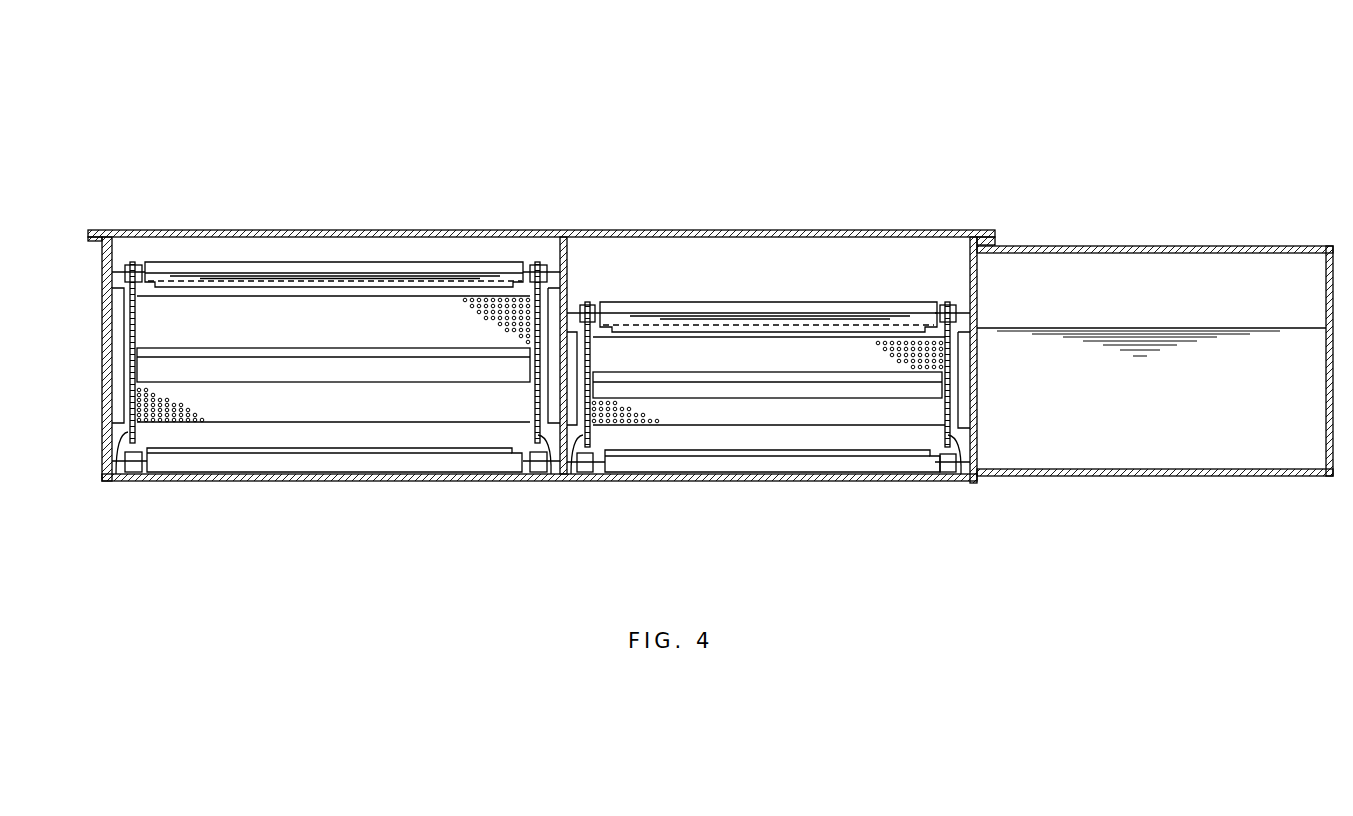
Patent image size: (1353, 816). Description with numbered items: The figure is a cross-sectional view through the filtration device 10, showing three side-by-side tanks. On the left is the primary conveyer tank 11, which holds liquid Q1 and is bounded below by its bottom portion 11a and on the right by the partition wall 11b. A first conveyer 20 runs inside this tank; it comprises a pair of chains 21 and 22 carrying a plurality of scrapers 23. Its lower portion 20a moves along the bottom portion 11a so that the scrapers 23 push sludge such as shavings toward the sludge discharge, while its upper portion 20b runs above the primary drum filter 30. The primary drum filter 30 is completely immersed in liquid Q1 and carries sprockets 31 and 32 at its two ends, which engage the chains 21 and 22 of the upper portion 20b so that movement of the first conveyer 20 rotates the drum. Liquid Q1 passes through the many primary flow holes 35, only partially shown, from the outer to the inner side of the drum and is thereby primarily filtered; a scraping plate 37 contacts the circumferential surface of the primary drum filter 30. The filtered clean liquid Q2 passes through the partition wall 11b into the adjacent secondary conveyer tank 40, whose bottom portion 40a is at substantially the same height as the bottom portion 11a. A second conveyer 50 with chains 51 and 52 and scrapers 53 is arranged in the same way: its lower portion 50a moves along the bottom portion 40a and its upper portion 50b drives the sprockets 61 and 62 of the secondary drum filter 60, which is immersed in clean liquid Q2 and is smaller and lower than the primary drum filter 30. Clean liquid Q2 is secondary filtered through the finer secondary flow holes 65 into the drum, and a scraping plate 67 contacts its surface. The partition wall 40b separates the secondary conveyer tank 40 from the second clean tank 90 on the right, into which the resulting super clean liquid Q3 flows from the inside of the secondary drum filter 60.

The filtration device 10 is at (846, 84).
The primary conveyer tank 11 is at (541, 348).
The bottom portion of the primary conveyer tank 11a is at (324, 480).
The partition wall 11b is at (567, 266).
The first conveyer 20 is at (333, 320).
The lower portion of the first conveyer 20a is at (253, 448).
The upper portion of the first conveyer 20b is at (228, 298).
The chain 21 is at (133, 262).
The chain 22 is at (540, 262).
The scrapers 23 is at (213, 262).
The primary drum filter 30 is at (383, 315).
The sprocket 31 is at (117, 478).
The sprocket 32 is at (538, 477).
The primary flow holes 35 is at (513, 307).
The scraping plate 37 is at (431, 373).
The secondary conveyer tank 40 is at (882, 348).
The bottom portion of the secondary conveyer tank 40a is at (762, 480).
The partition wall 40b is at (980, 298).
The second conveyer 50 is at (769, 320).
The lower portion of the second conveyer 50a is at (740, 451).
The upper portion of the second conveyer 50b is at (755, 338).
The chain 51 is at (583, 304).
The chain 52 is at (947, 304).
The scrapers 53 is at (652, 302).
The secondary drum filter 60 is at (790, 347).
The sprocket 61 is at (574, 477).
The sprocket 62 is at (963, 477).
The secondary flow holes 65 is at (928, 340).
The scraping plate 67 is at (843, 393).
The second clean tank 90 is at (1155, 322).
The liquid Q1 is at (447, 272).
The clean liquid Q2 is at (825, 312).
The super clean liquid Q3 is at (1175, 328).